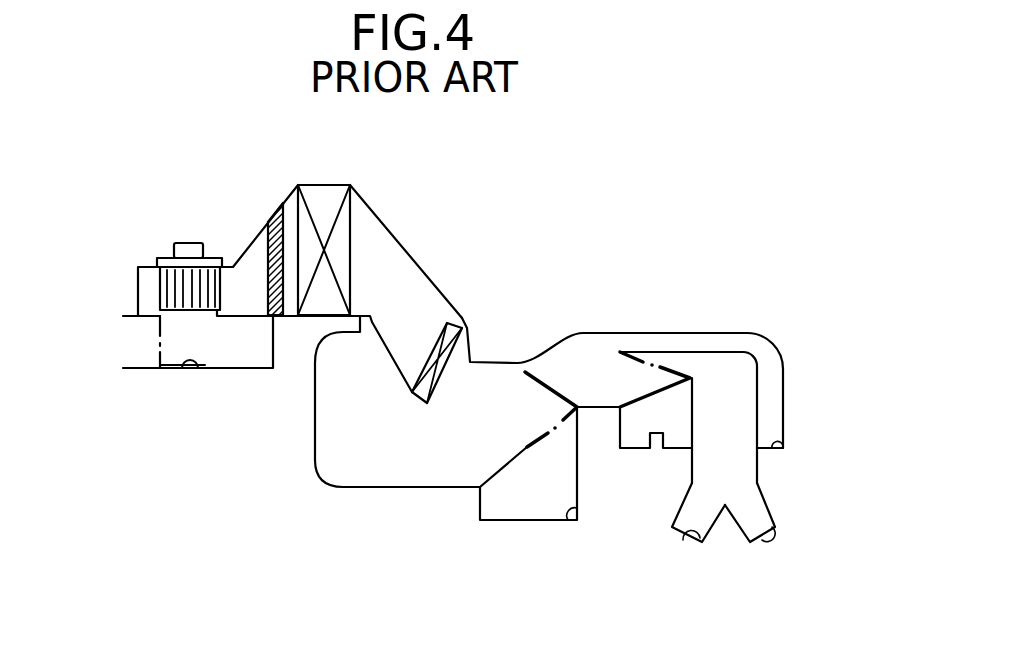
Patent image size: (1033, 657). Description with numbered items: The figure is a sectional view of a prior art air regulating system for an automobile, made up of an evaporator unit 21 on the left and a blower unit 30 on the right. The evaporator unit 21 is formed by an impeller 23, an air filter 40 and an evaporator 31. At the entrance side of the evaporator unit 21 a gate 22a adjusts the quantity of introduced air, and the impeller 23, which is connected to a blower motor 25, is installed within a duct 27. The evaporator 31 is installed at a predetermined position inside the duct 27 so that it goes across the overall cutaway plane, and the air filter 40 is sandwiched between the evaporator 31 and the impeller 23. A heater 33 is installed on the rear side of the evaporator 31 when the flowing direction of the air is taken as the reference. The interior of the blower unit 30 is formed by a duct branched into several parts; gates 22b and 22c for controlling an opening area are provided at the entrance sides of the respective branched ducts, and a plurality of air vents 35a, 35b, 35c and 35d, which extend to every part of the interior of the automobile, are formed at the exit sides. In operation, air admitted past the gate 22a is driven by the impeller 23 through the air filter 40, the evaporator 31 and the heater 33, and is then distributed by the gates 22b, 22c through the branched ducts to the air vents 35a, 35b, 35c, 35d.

The evaporator unit 21 is at (418, 250).
The impeller 23 is at (160, 282).
The blower motor 25 is at (178, 243).
The duct 27 is at (252, 258).
The evaporator 31 is at (338, 242).
The heater 33 is at (464, 321).
The air filter 40 is at (265, 284).
The gate 22a is at (182, 363).
The gate 22b is at (553, 383).
The gate 22c is at (645, 390).
The blower unit 30 is at (708, 328).
The air vent 35a is at (573, 510).
The air vent 35b is at (693, 532).
The air vent 35c is at (764, 540).
The air vent 35d is at (773, 448).